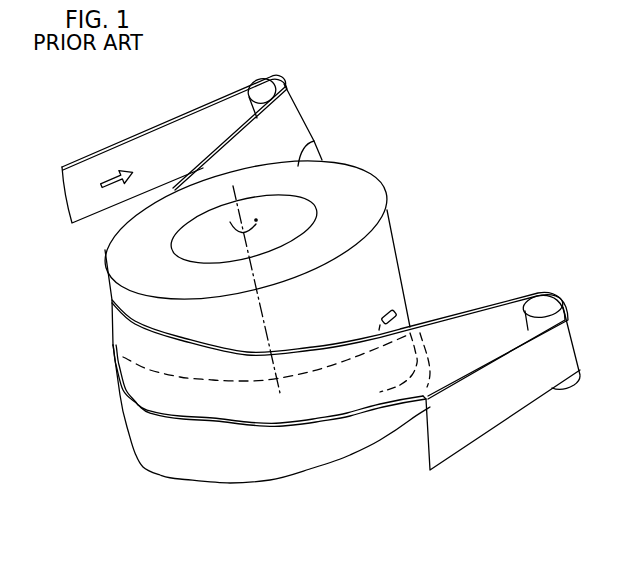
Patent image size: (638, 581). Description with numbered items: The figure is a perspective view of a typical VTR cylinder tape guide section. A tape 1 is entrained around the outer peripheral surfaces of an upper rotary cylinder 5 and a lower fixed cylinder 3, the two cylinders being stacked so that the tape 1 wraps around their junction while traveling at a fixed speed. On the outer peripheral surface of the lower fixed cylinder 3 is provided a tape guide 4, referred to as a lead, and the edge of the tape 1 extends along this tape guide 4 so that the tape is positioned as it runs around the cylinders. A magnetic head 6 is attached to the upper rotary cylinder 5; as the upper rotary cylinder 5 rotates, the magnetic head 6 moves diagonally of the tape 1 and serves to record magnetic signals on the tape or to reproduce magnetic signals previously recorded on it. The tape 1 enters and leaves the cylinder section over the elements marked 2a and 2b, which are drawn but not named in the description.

The tape 1 is at (465, 333).
The tape roll (supply end) 2a is at (272, 85).
The tape roll (take-up end) 2b is at (545, 305).
The lower fixed cylinder 3 is at (143, 432).
The tape guide 4 is at (122, 387).
The upper rotary cylinder 5 is at (353, 192).
The magnetic head 6 is at (403, 307).